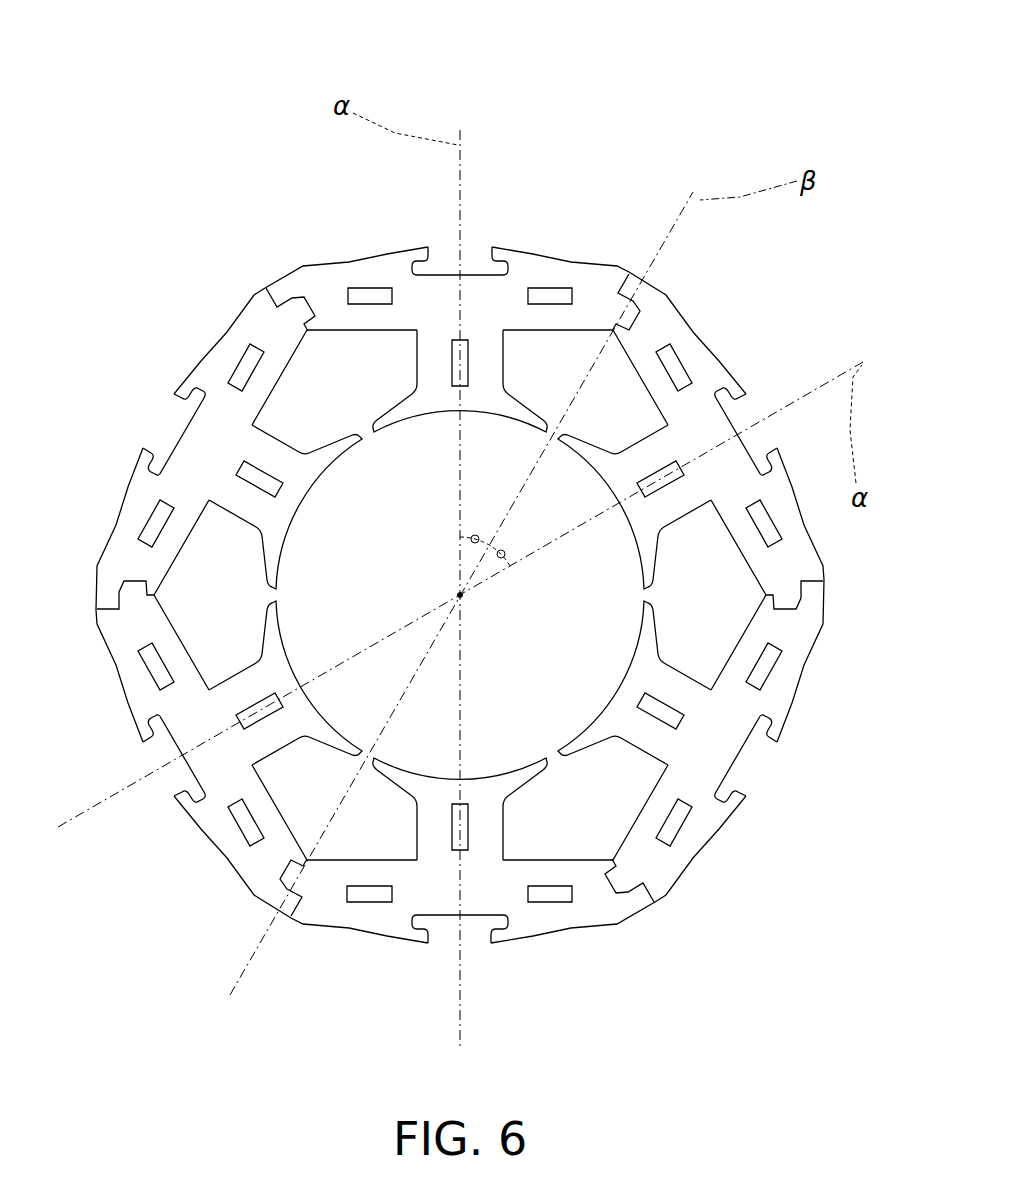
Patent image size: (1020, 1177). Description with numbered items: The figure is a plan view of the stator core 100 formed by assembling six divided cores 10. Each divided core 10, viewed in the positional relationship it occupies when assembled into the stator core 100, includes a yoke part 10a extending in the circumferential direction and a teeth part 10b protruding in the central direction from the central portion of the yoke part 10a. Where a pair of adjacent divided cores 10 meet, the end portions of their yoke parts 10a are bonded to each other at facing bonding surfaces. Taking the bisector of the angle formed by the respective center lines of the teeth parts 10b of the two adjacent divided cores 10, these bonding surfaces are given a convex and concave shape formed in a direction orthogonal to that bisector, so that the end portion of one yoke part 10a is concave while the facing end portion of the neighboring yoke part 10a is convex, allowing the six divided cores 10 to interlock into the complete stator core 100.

The stator core 100 is at (459, 526).
The divided core 10 is at (517, 247).
The yoke part 10a is at (387, 253).
The teeth part 10b is at (428, 412).